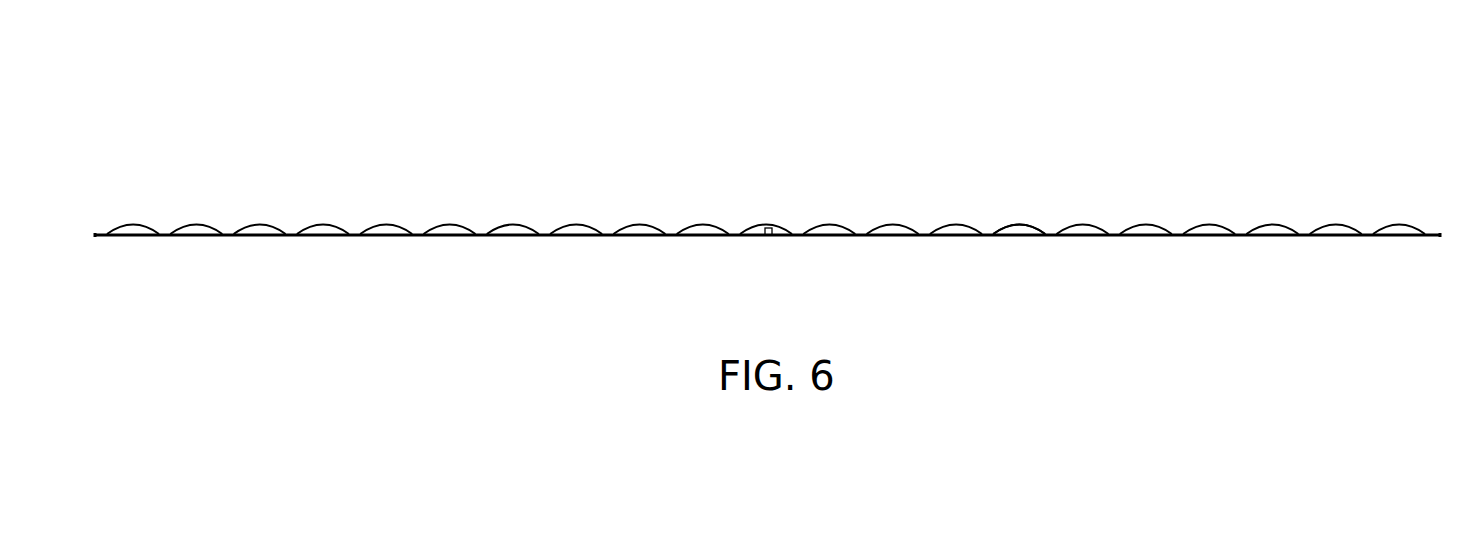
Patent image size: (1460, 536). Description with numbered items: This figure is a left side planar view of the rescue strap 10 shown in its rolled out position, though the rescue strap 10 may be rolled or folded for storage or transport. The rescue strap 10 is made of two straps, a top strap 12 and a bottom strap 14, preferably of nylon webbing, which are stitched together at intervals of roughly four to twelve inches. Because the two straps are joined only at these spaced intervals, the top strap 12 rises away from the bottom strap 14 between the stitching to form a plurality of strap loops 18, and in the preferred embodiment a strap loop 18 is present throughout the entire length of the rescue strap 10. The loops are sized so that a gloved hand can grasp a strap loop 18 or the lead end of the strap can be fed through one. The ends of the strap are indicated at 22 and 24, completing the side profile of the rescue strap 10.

The rescue strap 10 is at (768, 202).
The top strap 12 is at (1028, 226).
The bottom strap 14 is at (1016, 236).
The strap loop 18 is at (892, 227).
The first edge 22 is at (96, 222).
The second edge 24 is at (1436, 222).